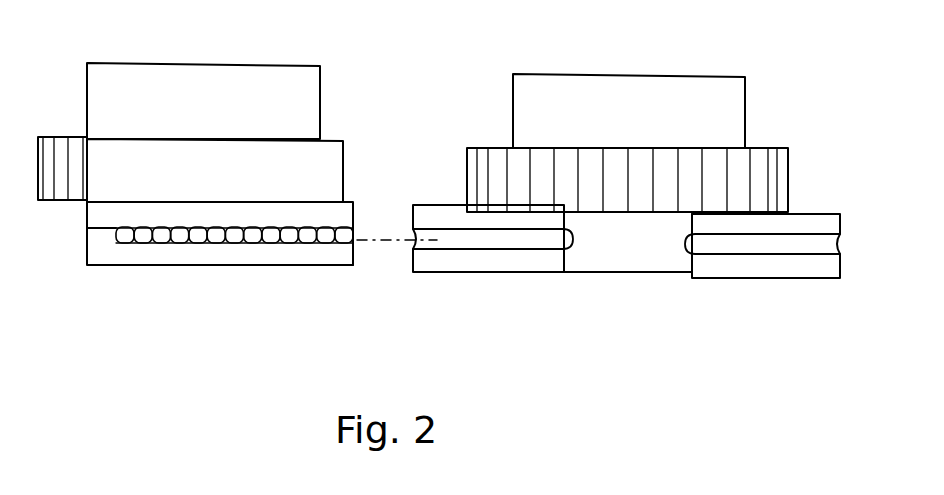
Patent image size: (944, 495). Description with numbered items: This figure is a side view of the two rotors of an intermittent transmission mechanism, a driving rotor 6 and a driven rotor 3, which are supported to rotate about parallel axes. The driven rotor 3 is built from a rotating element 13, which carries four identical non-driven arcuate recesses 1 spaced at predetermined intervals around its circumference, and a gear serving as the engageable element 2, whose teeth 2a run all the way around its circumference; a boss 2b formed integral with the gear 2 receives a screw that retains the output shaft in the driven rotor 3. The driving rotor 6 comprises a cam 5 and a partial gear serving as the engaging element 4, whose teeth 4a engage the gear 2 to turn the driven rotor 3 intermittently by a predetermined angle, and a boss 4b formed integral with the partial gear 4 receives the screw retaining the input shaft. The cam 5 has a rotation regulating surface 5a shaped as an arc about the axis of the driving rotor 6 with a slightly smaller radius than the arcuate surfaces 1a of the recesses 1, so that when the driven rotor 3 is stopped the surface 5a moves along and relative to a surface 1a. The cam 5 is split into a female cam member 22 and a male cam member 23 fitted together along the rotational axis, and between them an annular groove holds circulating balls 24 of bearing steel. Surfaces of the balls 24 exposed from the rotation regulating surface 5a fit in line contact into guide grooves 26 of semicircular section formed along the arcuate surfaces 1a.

The arcuate recess 1 is at (626, 294).
The arcuate surface 1a is at (438, 274).
The engageable element 2 is at (644, 142).
The teeth 2a is at (789, 180).
The boss 2b is at (735, 114).
The driven rotor 3 is at (644, 106).
The engaging element 4 is at (204, 164).
The teeth 4a is at (52, 201).
The boss 4b is at (93, 105).
The cam 5 is at (232, 272).
The rotation regulating surface 5a is at (354, 258).
The driving rotor 6 is at (204, 136).
The rotating element 13 is at (628, 262).
The female cam member 22 is at (104, 212).
The male cam member 23 is at (148, 253).
The balls 24 is at (290, 234).
The guide grooves 26 is at (513, 273).